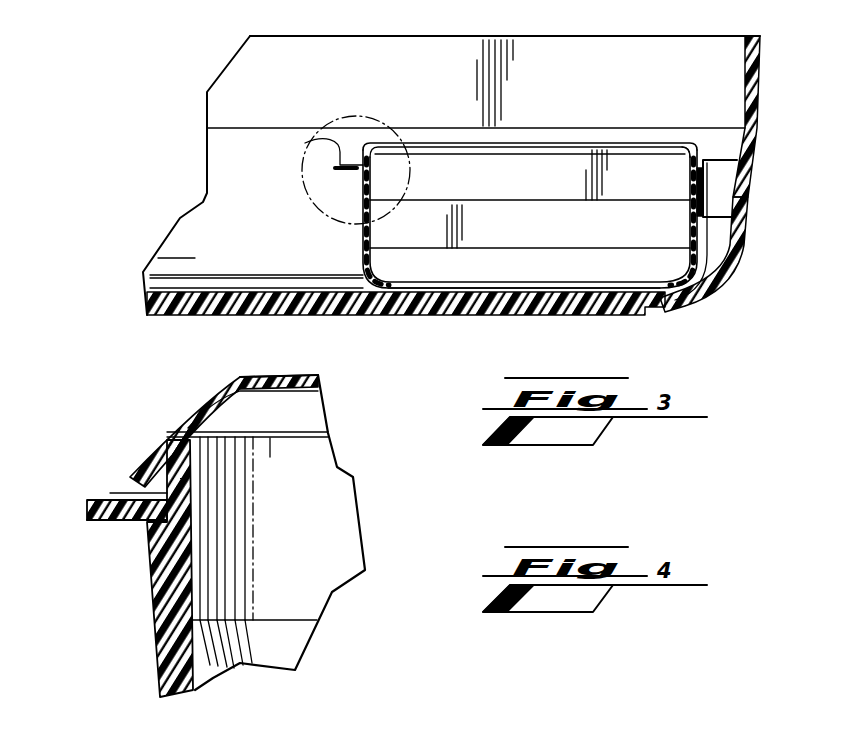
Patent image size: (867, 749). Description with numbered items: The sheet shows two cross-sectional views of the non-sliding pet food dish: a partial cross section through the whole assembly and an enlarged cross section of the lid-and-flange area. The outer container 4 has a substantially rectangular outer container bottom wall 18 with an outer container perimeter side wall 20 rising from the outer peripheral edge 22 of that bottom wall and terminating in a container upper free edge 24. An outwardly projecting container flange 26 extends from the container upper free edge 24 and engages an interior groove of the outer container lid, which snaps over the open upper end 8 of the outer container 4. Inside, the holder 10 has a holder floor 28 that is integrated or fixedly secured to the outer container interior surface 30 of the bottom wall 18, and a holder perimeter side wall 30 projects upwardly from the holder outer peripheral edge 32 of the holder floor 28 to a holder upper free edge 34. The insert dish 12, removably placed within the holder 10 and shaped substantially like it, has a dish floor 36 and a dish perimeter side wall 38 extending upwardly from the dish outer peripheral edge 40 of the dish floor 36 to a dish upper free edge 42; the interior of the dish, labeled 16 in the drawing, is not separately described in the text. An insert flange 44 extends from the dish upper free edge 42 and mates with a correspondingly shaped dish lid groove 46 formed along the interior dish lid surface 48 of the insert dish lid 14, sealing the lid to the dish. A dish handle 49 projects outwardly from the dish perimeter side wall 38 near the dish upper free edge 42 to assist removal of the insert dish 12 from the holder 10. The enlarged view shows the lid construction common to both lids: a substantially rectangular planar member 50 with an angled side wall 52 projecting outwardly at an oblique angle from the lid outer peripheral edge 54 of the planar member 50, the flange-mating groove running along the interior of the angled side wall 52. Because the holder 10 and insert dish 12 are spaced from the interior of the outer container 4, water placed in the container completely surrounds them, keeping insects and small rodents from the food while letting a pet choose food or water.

In FIG. 3, the outer container 4 is at (277, 245).
In FIG. 4, the outer container 4 is at (590, 748).
In FIG. 3, the open upper end 8 is at (258, 24).
In FIG. 4, the holder 10 is at (128, 688).
In FIG. 4, the insert dish 12 is at (195, 690).
In FIG. 3, the insert dish lid 14 is at (580, 124).
In FIG. 3, the tub interior 16 is at (441, 158).
In FIG. 3, the outer container bottom wall 18 is at (188, 317).
In FIG. 3, the outer container perimeter side wall 20 is at (748, 197).
In FIG. 3, the outer peripheral edge 22 is at (663, 310).
In FIG. 3, the container upper free edge 24 is at (748, 35).
In FIG. 3, the container flange 26 is at (760, 80).
In FIG. 3, the holder floor 28 is at (450, 313).
In FIG. 3, the holder perimeter side wall 30 is at (360, 244).
In FIG. 4, the holder perimeter side wall 30 is at (150, 630).
In FIG. 3, the holder outer peripheral edge 32 is at (390, 290).
In FIG. 3, the holder upper free edge 34 is at (737, 165).
In FIG. 3, the dish floor 36 is at (557, 280).
In FIG. 3, the dish perimeter side wall 38 is at (687, 220).
In FIG. 3, the dish outer peripheral edge 40 is at (665, 275).
In FIG. 3, the dish upper free edge 42 is at (685, 152).
In FIG. 4, the insert flange 44 is at (300, 433).
In FIG. 4, the dish lid groove 46 is at (197, 437).
In FIG. 4, the interior dish lid surface 48 is at (293, 397).
In FIG. 3, the dish handle 49 is at (310, 140).
In FIG. 4, the dish handle 49 is at (114, 522).
In FIG. 3, the planar member 50 is at (510, 143).
In FIG. 4, the planar member 50 is at (255, 378).
In FIG. 3, the angled side wall 52 is at (700, 142).
In FIG. 4, the angled side wall 52 is at (170, 427).
In FIG. 4, the lid outer peripheral edge 54 is at (143, 488).